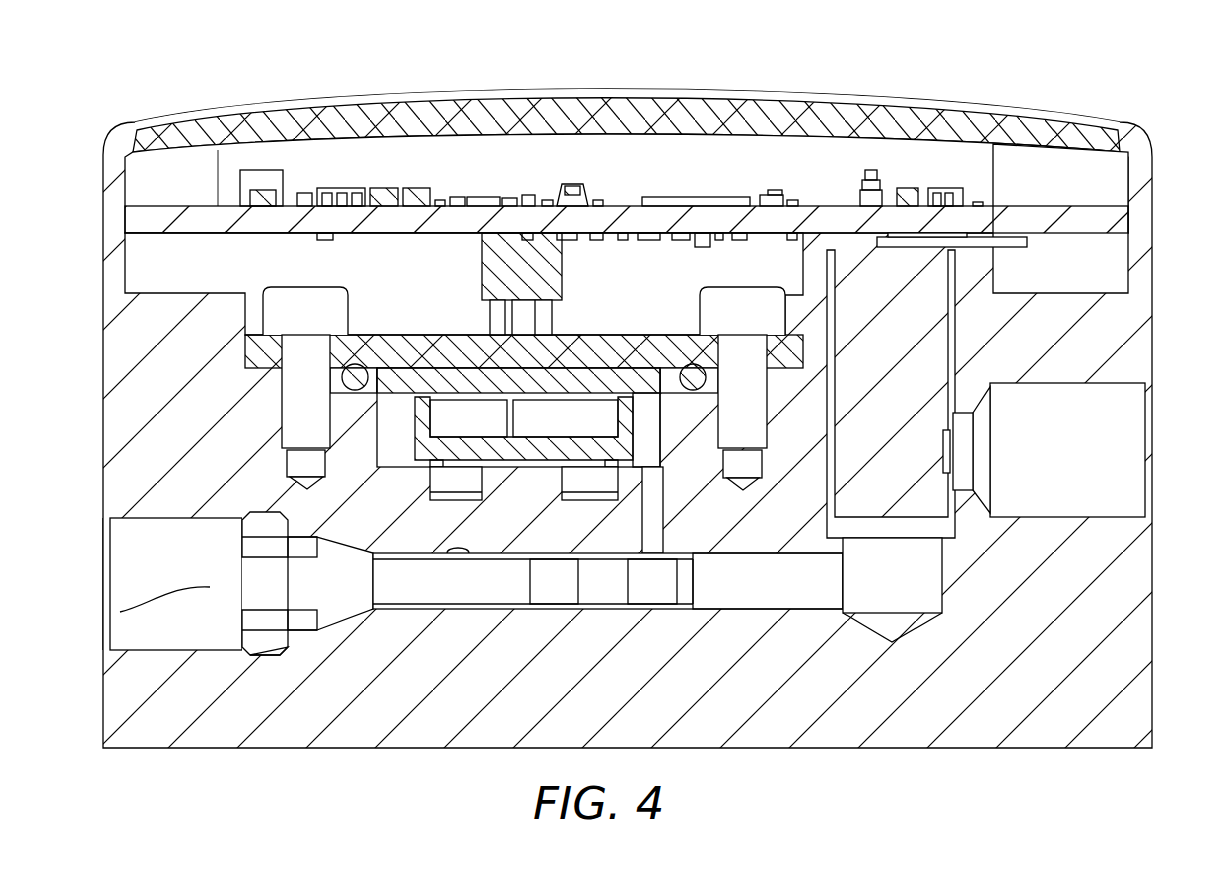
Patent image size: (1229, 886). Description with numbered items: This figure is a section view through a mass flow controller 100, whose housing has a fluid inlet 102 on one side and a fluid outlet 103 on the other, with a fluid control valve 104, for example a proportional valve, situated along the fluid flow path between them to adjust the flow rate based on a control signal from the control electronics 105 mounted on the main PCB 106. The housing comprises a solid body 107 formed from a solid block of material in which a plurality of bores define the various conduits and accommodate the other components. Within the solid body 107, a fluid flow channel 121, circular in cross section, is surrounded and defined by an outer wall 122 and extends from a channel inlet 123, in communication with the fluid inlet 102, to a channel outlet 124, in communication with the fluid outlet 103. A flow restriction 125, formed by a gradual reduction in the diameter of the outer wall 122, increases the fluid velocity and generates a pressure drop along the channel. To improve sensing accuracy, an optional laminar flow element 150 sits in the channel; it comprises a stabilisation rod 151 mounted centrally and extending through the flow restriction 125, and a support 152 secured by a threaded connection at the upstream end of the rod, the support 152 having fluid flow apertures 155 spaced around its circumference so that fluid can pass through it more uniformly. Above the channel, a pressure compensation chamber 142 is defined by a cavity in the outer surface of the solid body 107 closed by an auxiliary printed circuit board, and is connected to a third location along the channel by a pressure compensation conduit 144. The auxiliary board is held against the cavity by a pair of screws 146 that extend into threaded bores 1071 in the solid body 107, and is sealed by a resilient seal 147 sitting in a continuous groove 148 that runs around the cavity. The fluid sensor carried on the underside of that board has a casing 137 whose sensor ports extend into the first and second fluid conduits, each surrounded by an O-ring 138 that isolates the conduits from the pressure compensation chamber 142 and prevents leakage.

The mass flow controller 100 is at (196, 76).
The fluid inlet 102 is at (120, 555).
The fluid outlet 103 is at (1133, 448).
The fluid control valve 104 is at (950, 305).
The control electronics 105 is at (634, 190).
The main PCB 106 is at (1040, 214).
The solid body 107 is at (256, 511).
The threaded bores 1071 is at (745, 475).
The fluid flow channel 121 is at (643, 600).
The outer wall 122 is at (757, 560).
The channel inlet 123 is at (120, 612).
The channel outlet 124 is at (845, 585).
The flow restriction 125 is at (497, 612).
The casing 137 is at (414, 438).
The O-ring 138 is at (430, 482).
The pressure compensation chamber 142 is at (652, 440).
The pressure compensation conduit 144 is at (658, 515).
The screws 146 is at (308, 297).
The resilient seal 147 is at (355, 362).
The continuous groove 148 is at (405, 345).
The laminar flow element 150 is at (420, 596).
The stabilisation rod 151 is at (567, 600).
The support 152 is at (255, 642).
The fluid flow apertures 155 is at (247, 547).